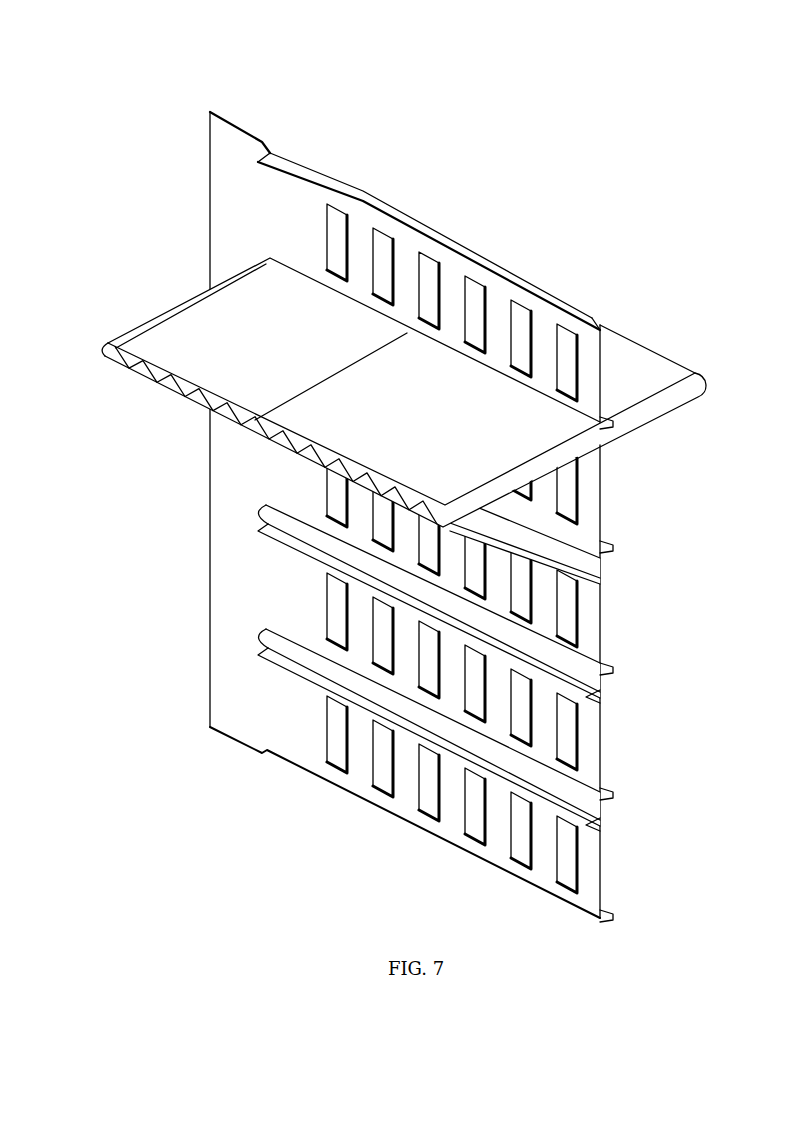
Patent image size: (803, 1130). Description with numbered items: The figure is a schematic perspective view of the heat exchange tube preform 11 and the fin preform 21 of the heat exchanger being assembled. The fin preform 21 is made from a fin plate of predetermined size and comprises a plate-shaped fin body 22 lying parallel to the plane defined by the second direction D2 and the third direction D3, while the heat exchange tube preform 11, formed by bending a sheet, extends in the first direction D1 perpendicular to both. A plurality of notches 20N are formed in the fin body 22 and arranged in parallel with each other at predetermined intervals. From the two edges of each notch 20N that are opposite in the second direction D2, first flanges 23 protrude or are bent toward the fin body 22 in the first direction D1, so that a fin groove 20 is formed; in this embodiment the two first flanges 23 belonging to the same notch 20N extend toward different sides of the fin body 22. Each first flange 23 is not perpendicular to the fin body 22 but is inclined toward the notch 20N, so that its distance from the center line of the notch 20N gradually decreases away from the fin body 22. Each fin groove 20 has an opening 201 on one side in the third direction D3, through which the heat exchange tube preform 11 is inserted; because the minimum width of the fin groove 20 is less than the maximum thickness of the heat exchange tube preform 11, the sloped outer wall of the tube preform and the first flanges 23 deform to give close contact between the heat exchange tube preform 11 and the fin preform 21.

The heat exchange tube preform 11 is at (665, 348).
The fin groove 20 is at (600, 573).
The opening 201 is at (583, 556).
The notch 20N is at (588, 814).
The fin preform 21 is at (248, 125).
The fin body 22 is at (240, 228).
The first flange 23 is at (600, 667).
The first direction D1 is at (186, 17).
The second direction D2 is at (108, 489).
The third direction D3 is at (563, 128).